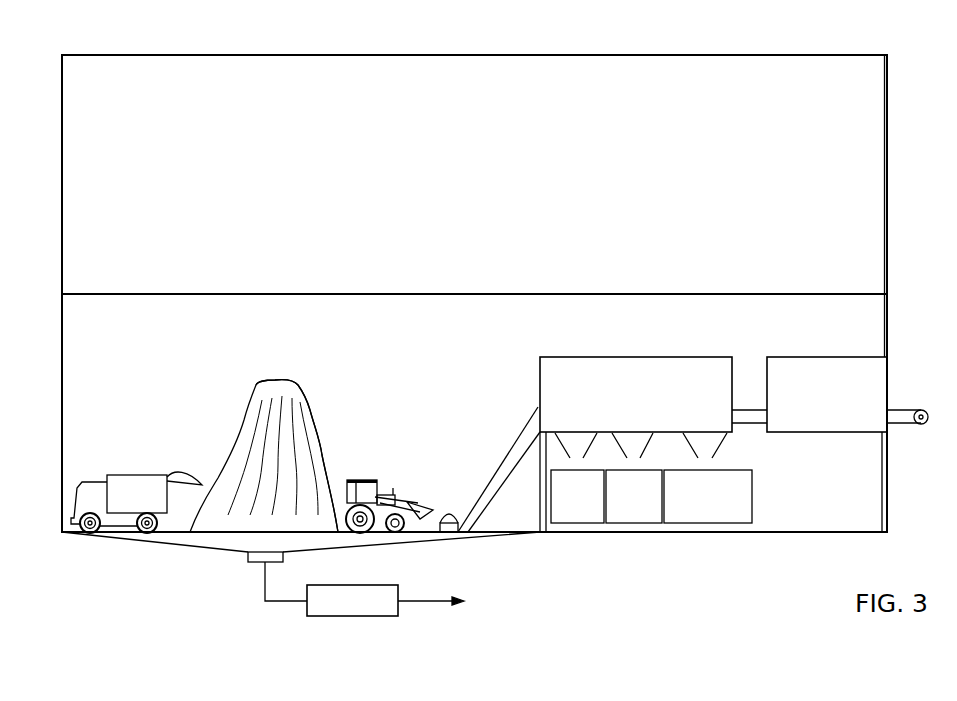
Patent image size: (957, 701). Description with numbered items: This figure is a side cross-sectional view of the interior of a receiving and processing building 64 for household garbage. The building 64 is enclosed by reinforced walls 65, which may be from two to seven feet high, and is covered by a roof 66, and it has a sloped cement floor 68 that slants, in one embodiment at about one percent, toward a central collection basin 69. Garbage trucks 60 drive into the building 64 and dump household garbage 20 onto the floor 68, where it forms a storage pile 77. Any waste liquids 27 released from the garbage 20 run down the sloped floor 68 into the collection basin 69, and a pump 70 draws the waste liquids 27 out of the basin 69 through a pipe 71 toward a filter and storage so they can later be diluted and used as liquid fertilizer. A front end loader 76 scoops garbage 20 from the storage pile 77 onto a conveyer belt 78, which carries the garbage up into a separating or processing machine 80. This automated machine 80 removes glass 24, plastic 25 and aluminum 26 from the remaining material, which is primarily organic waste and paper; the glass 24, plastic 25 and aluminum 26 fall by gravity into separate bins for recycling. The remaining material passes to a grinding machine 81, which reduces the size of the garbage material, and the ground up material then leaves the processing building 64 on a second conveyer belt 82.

The receiving and processing building 64 is at (477, 55).
The roof 66 is at (312, 56).
The reinforced walls 65 is at (442, 294).
The garbage trucks 60 is at (138, 475).
The household garbage 20 is at (275, 380).
The storage pile 77 is at (310, 395).
The front end loader 76 is at (364, 480).
The conveyer belt 78 is at (500, 465).
The separating or processing machine 80 is at (653, 444).
The glass 24 is at (577, 496).
The plastic 25 is at (634, 496).
The aluminum 26 is at (708, 496).
The grinding machine 81 is at (827, 444).
The conveyer belt 82 is at (922, 410).
The sloped cement floor 68 is at (177, 546).
The central collection basin 69 is at (247, 555).
The pump 70 is at (331, 589).
The pipe 71 is at (421, 600).
The waste liquids 27 is at (511, 601).